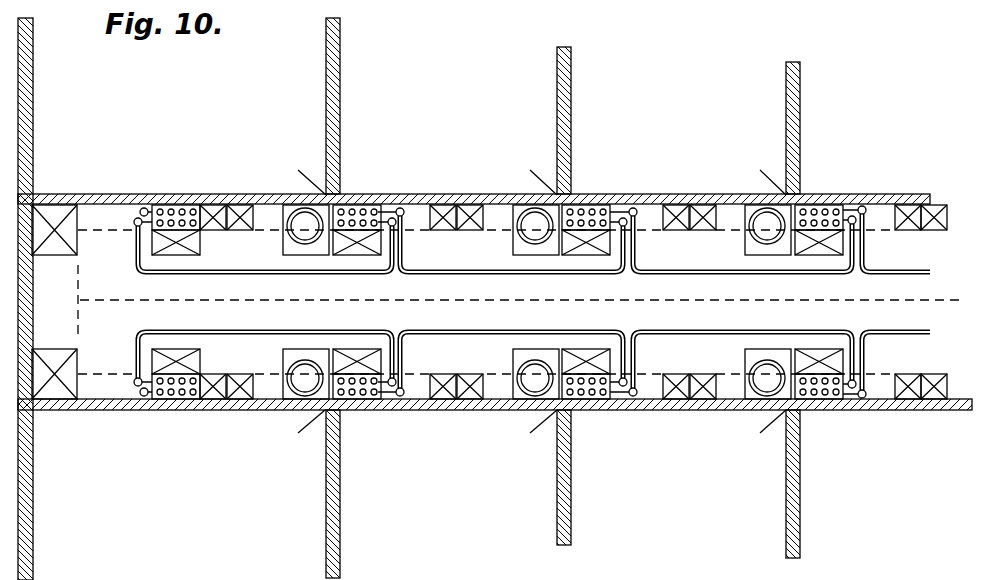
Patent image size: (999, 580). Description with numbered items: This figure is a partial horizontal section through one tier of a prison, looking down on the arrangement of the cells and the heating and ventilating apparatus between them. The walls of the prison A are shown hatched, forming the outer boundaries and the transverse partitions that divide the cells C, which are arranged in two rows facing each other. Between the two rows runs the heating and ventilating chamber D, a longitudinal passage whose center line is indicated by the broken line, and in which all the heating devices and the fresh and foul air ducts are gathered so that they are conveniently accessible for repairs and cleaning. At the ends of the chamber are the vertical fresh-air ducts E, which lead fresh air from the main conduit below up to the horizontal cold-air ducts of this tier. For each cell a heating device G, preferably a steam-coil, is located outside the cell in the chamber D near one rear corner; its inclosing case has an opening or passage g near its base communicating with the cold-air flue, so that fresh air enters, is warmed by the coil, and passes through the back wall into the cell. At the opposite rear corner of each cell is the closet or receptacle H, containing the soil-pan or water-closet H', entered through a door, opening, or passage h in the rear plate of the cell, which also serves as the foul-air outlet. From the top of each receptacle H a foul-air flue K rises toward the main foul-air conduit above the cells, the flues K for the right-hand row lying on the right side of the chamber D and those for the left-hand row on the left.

The walls of the prison A is at (786, 512).
The cells C is at (491, 310).
The heating and ventilating chamber D is at (522, 296).
The vertical fresh-air ducts E is at (62, 438).
The heating device G is at (815, 402).
The foul-air flue K is at (925, 402).
The closet or receptacle H is at (537, 302).
The soil-pan or water-closet H' is at (494, 349).
The door, opening, or passage h is at (755, 433).
The opening or passage g is at (818, 355).